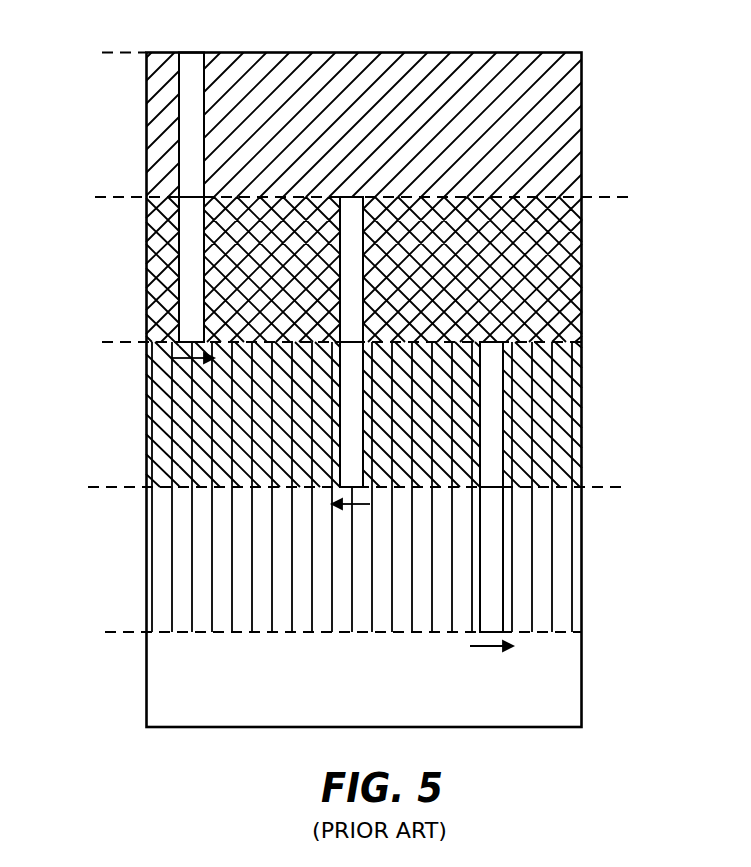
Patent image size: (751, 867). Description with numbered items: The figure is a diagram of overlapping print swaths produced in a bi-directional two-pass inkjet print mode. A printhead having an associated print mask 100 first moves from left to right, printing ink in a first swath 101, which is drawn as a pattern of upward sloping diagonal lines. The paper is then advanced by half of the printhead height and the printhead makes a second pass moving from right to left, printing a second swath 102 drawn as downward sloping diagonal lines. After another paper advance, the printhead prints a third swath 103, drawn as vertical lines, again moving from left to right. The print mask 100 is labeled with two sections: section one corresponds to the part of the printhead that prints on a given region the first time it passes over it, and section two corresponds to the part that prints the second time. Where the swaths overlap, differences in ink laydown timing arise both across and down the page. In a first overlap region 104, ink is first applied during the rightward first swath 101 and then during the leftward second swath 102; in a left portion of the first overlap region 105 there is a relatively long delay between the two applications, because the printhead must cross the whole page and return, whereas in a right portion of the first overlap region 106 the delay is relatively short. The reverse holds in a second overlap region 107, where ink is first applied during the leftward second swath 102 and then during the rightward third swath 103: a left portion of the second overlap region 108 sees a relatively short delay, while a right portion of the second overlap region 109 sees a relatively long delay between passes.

The print mask 100 is at (192, 61).
The first swath 101 is at (102, 52).
The second swath 102 is at (632, 197).
The third swath 103 is at (102, 342).
The first overlap region 104 is at (271, 269).
The left portion of the first overlap region 105 is at (155, 274).
The right portion of the first overlap region 106 is at (574, 281).
The second overlap region 107 is at (329, 414).
The left portion of the second overlap region 108 is at (155, 431).
The right portion of the second overlap region 109 is at (574, 438).